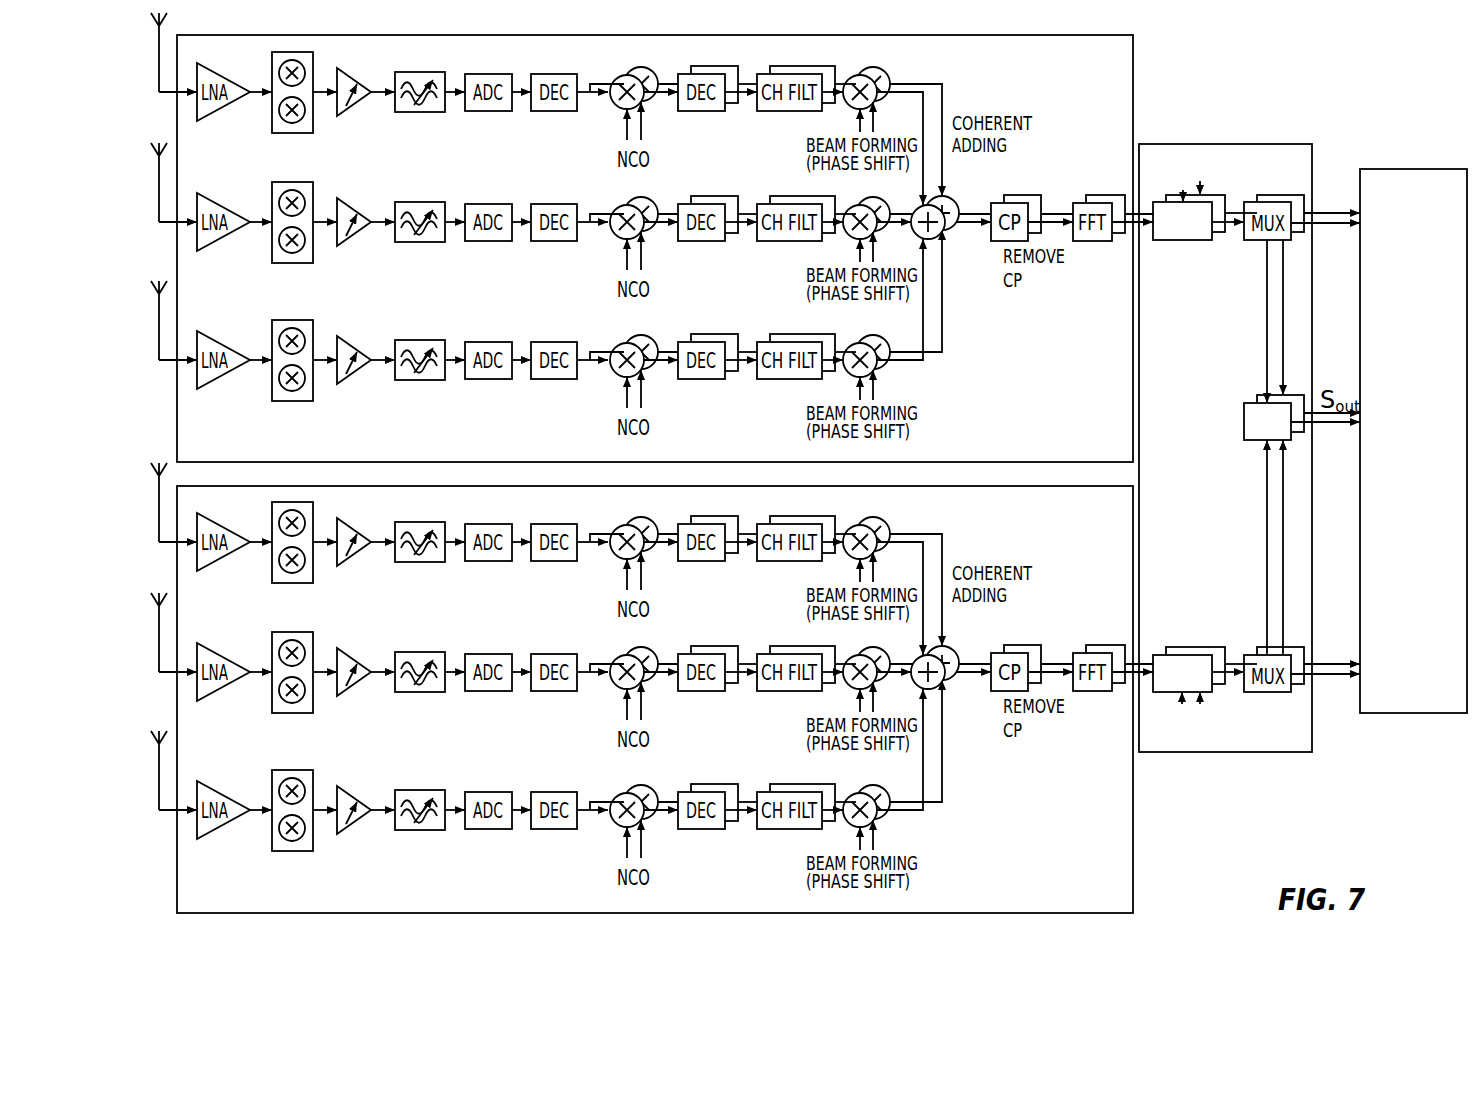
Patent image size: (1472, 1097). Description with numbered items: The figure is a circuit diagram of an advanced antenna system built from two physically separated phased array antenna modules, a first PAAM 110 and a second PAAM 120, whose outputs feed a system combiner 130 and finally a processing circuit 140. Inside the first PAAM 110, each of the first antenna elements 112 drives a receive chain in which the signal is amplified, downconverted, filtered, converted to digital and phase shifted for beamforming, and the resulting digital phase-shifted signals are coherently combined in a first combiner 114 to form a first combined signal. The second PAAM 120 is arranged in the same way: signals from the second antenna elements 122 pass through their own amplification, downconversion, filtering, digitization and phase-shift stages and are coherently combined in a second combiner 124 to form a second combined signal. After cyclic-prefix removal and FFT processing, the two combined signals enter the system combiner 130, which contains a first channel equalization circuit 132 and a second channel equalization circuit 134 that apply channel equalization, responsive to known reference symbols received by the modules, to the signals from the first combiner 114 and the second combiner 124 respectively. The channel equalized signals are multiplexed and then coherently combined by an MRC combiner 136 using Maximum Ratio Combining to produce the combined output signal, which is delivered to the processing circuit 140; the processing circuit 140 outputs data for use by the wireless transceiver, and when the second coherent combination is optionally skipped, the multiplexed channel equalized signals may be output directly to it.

The first PAAM 110 is at (1123, 454).
The first antenna elements 112 is at (156, 54).
The first combiner 114 is at (960, 241).
The second PAAM 120 is at (1115, 897).
The second antenna elements 122 is at (156, 504).
The second combiner 124 is at (960, 691).
The system combiner 130 is at (1225, 448).
The first channel equalization circuit 132 is at (1194, 246).
The second channel equalization circuit 134 is at (1195, 646).
The MRC combiner 136 is at (1257, 388).
The processing circuit 140 is at (1428, 453).